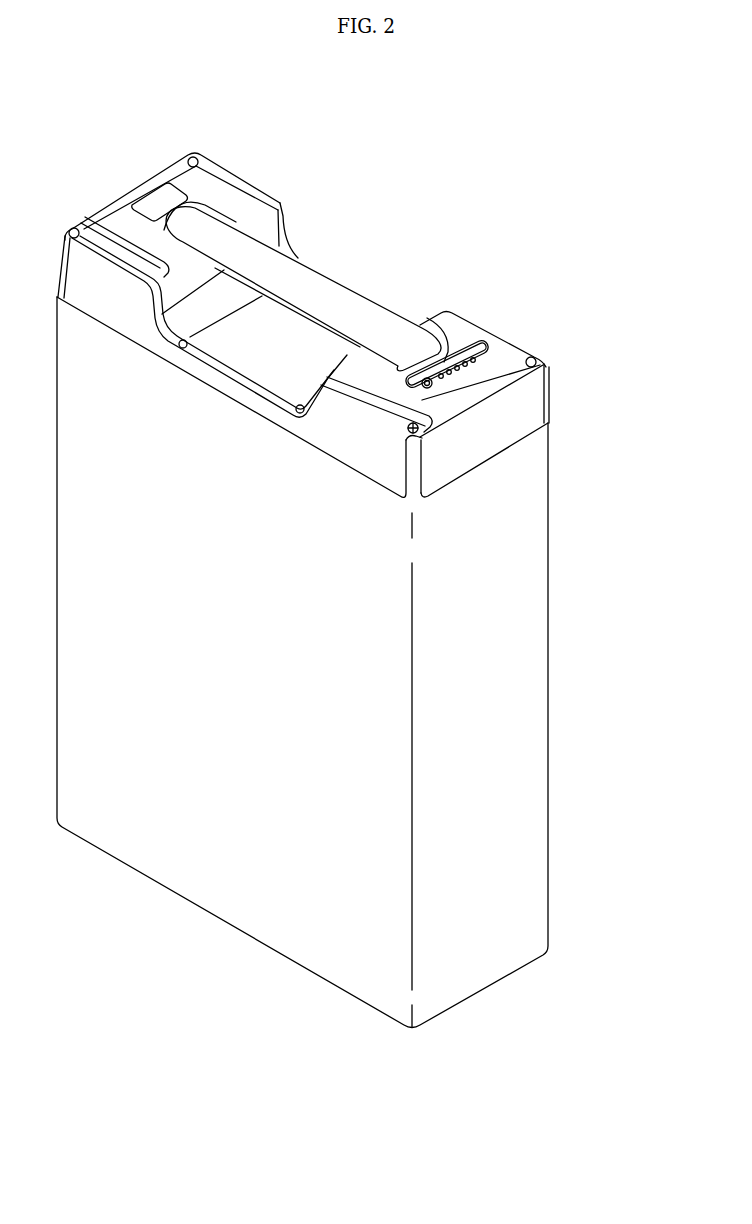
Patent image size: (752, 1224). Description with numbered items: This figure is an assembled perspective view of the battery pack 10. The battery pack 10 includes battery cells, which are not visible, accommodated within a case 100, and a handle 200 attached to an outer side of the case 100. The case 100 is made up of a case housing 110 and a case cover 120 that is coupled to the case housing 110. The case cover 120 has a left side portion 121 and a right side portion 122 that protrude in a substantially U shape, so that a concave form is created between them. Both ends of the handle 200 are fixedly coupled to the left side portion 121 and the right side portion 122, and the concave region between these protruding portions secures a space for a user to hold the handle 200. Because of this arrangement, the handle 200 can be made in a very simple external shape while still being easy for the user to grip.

The battery pack 10 is at (108, 98).
The case 100 is at (636, 379).
The case housing 110 is at (557, 617).
The case cover 120 is at (557, 398).
The left side portion 121 is at (227, 186).
The right side portion 122 is at (488, 335).
The handle 200 is at (338, 283).